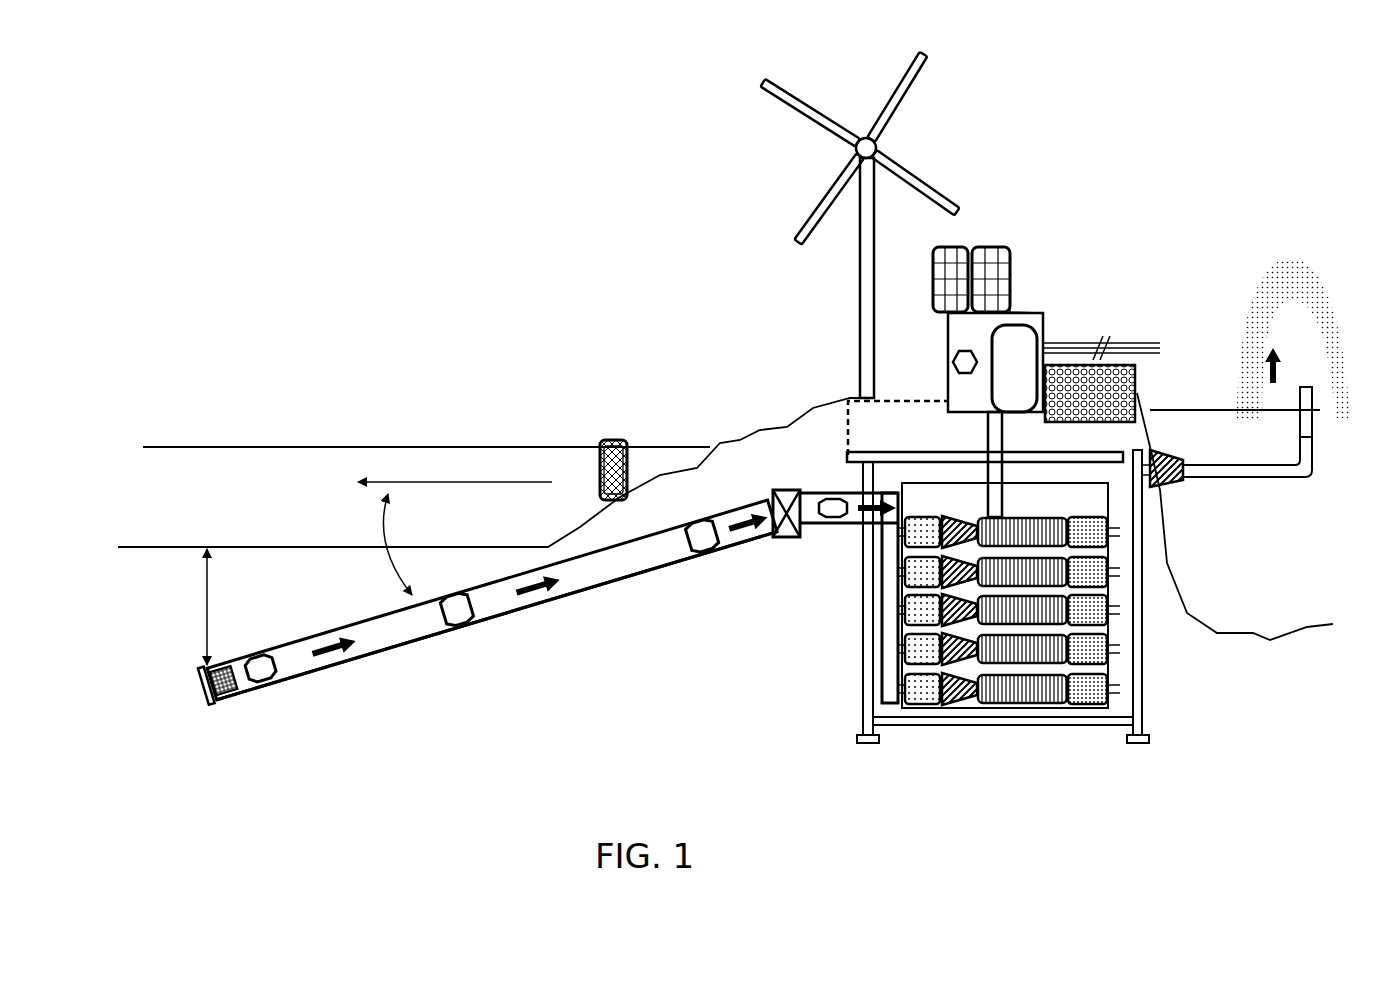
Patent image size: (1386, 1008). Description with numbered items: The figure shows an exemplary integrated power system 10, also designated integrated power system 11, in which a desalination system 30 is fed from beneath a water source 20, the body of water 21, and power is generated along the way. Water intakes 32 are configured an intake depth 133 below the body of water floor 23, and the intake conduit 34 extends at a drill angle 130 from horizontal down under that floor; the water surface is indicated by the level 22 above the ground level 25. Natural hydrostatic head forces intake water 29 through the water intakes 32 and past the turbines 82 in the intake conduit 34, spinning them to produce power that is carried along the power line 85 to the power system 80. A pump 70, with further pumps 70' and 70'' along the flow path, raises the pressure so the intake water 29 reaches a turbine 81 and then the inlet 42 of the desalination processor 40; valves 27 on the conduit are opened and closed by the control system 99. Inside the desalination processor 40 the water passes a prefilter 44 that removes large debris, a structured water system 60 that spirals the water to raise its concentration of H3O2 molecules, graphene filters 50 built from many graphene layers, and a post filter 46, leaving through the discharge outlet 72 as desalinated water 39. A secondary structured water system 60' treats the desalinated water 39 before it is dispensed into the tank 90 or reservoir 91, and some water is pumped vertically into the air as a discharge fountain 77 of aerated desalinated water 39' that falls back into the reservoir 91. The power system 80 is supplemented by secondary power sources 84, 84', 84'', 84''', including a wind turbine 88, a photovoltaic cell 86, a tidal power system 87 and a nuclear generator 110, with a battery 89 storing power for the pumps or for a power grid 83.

The integrated power system 10 is at (452, 140).
The integrated power system 11 is at (947, 270).
The water source 20 is at (498, 514).
The body of water 21 is at (453, 462).
The water level 22 is at (531, 441).
The body of water floor 23 is at (160, 543).
The ground level 25 is at (900, 398).
The valves 27 is at (610, 562).
The intake water 29 is at (313, 658).
The desalination system 30 is at (1152, 580).
The water intakes 32 is at (203, 684).
The intake conduit 34 is at (440, 627).
The desalinated water 39 is at (1247, 462).
The desalinated water 39' is at (1293, 322).
The desalination processor 40 is at (1028, 654).
The inlet 42 is at (888, 493).
The prefilter 44 is at (918, 700).
The post filter 46 is at (1085, 700).
The graphene filters 50 is at (1025, 705).
The structured water system 60 is at (956, 651).
The secondary structured water system 60' is at (1179, 493).
The pump 70 is at (264, 641).
The collected material 70' is at (466, 582).
The pump 70'' is at (724, 504).
The discharge outlet 72 is at (1297, 435).
The discharge fountain 77 is at (1243, 290).
The power system 80 is at (1130, 226).
The turbine 81 is at (836, 524).
The turbines 82 is at (227, 698).
The power grid 83 is at (1133, 348).
The secondary power source 84 is at (877, 225).
The secondary power source 84' is at (995, 237).
The secondary power source 84'' is at (1053, 345).
The secondary power source 84''' is at (641, 436).
The power line 85 is at (847, 452).
The photovoltaic cell 86 is at (1010, 280).
The tidal power system 87 is at (610, 440).
The wind turbine 88 is at (875, 150).
The battery 89 is at (1138, 372).
The tank 90 is at (1187, 440).
The reservoir 91 is at (1160, 423).
The control system 99 is at (965, 351).
The nuclear generator 110 is at (1038, 313).
The drill angle 130 is at (388, 558).
The intake depth 133 is at (205, 612).